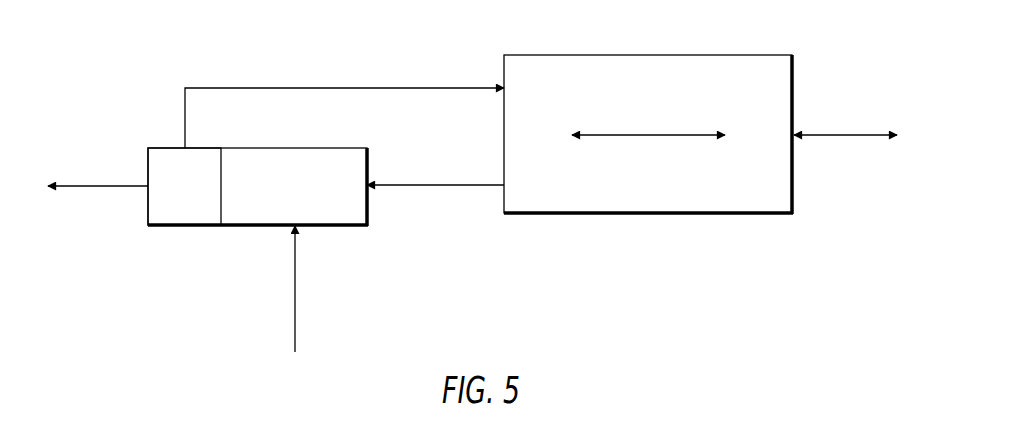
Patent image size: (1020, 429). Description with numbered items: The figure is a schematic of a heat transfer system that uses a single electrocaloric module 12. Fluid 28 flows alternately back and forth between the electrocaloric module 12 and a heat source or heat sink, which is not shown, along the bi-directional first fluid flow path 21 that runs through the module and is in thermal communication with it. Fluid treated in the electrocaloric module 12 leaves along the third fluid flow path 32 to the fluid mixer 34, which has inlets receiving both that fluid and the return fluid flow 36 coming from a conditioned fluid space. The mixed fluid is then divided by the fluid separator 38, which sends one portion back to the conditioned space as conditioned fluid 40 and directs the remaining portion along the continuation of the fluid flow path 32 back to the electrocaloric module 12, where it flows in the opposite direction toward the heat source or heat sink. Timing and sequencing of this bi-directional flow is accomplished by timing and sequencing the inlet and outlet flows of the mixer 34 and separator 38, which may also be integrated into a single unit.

The electrocaloric module 12 is at (562, 213).
The first fluid flow path 21 is at (645, 135).
The fluid 28 is at (840, 135).
The third fluid flow path 32 is at (410, 90).
The fluid mixer 34 is at (262, 226).
The return fluid flow 36 is at (295, 311).
The fluid separator 38 is at (193, 226).
The conditioned fluid 40 is at (117, 186).